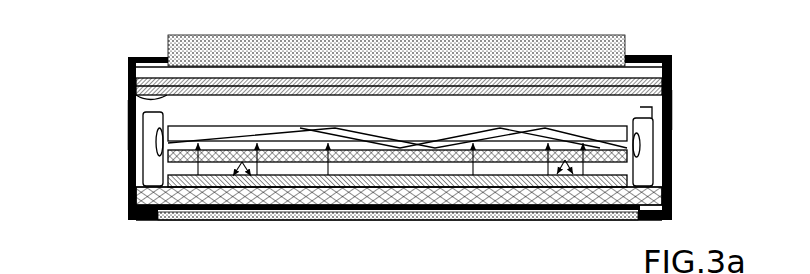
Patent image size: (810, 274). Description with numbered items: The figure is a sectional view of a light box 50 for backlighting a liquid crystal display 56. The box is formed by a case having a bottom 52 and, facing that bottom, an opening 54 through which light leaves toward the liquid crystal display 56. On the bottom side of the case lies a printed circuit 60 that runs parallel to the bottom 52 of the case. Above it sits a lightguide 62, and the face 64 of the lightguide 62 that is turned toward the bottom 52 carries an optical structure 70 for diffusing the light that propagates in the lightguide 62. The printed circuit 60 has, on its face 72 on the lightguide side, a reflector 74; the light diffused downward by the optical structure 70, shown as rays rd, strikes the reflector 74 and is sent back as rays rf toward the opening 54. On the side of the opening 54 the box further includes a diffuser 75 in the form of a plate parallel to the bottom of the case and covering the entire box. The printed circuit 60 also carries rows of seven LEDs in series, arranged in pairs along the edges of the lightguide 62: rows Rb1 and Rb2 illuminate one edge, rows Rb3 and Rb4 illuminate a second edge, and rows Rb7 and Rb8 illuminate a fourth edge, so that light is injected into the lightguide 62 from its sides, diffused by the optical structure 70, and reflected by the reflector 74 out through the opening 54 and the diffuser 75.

The housing 50 is at (673, 158).
The bottom 52 is at (657, 221).
The opening 54 is at (638, 46).
The liquid crystal display 56 is at (412, 50).
The printed circuit 60 is at (292, 182).
The lightguide 62 is at (373, 140).
The face 64 is at (460, 156).
The optical structure 70 is at (437, 165).
The face 72 is at (278, 135).
The reflector 74 is at (357, 185).
The diffuser 75 is at (128, 92).
The rays rf is at (597, 150).
The rays rd is at (620, 203).
The row of LEDs Rb1 is at (259, 193).
The row of LEDs Rb2 is at (524, 196).
The row of LEDs Rb3 is at (673, 107).
The row of LEDs Rb4 is at (709, 109).
The row of LEDs Rb7 is at (128, 112).
The row of LEDs Rb8 is at (85, 148).